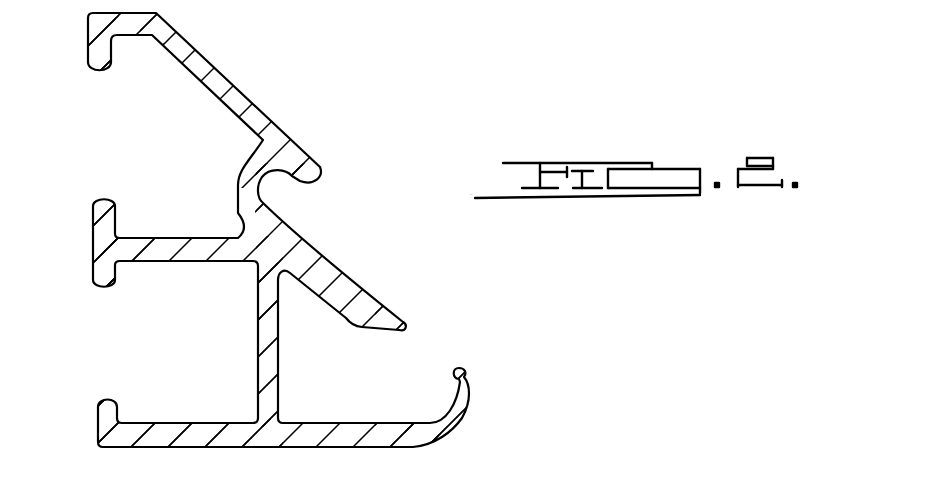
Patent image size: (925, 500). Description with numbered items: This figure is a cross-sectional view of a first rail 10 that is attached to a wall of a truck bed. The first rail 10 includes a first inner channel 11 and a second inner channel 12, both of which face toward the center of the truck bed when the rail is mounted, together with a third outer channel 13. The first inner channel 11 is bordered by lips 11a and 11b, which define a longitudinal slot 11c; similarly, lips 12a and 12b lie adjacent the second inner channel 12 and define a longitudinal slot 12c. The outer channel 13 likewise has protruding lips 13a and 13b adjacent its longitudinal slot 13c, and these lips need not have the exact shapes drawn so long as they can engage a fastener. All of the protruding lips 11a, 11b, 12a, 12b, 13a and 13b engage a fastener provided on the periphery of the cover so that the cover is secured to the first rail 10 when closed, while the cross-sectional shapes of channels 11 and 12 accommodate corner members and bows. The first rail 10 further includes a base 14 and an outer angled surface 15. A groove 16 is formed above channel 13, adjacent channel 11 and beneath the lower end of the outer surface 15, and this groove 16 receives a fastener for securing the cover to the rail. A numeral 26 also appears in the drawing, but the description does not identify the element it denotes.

The first rail 10 is at (326, 72).
The first inner channel 11 is at (148, 123).
The lip 11a is at (103, 63).
The lip 11b is at (95, 204).
The longitudinal slot 11c is at (100, 162).
The second inner channel 12 is at (167, 332).
The lip 12a is at (110, 282).
The lip 12b is at (107, 407).
The longitudinal slot 12c is at (105, 366).
The third outer channel 13 is at (304, 342).
The protruding lip 13a is at (401, 327).
The protruding lip 13b is at (458, 373).
The longitudinal slot 13c is at (425, 350).
The base 14 is at (290, 447).
The outer angled surface 15 is at (229, 75).
The groove 16 is at (278, 192).
The panel 26 is at (500, 499).